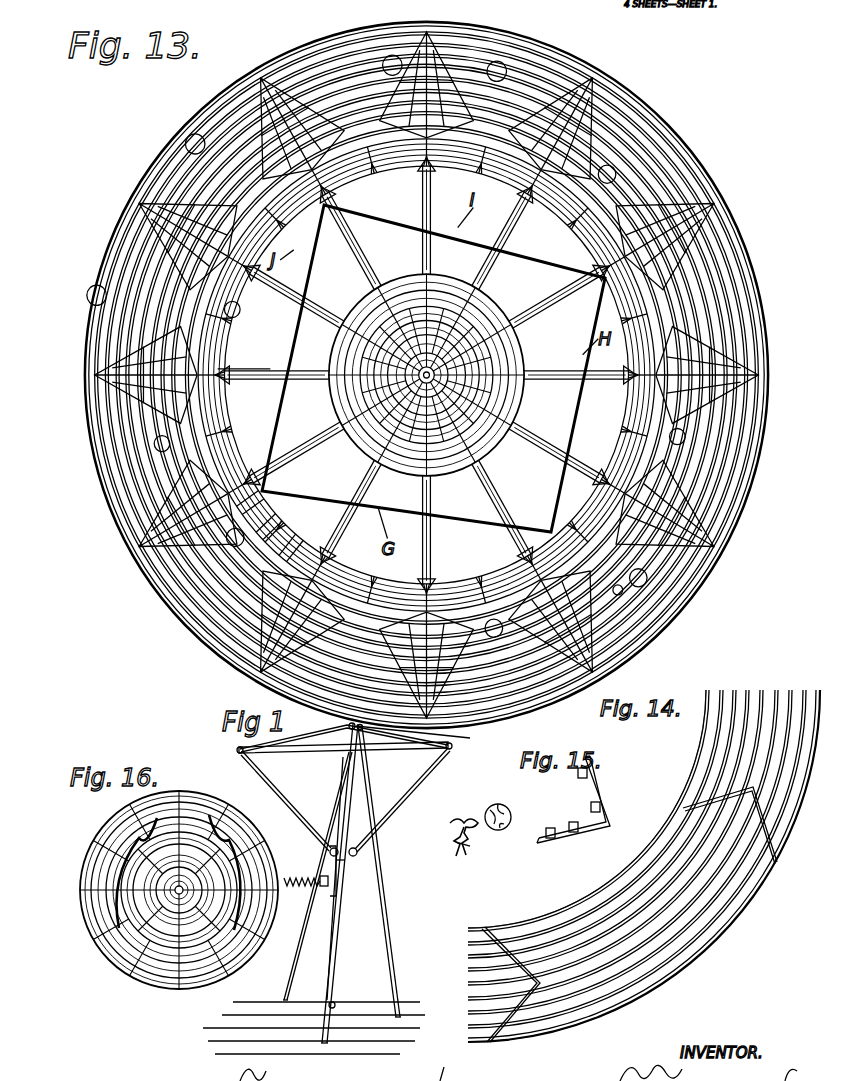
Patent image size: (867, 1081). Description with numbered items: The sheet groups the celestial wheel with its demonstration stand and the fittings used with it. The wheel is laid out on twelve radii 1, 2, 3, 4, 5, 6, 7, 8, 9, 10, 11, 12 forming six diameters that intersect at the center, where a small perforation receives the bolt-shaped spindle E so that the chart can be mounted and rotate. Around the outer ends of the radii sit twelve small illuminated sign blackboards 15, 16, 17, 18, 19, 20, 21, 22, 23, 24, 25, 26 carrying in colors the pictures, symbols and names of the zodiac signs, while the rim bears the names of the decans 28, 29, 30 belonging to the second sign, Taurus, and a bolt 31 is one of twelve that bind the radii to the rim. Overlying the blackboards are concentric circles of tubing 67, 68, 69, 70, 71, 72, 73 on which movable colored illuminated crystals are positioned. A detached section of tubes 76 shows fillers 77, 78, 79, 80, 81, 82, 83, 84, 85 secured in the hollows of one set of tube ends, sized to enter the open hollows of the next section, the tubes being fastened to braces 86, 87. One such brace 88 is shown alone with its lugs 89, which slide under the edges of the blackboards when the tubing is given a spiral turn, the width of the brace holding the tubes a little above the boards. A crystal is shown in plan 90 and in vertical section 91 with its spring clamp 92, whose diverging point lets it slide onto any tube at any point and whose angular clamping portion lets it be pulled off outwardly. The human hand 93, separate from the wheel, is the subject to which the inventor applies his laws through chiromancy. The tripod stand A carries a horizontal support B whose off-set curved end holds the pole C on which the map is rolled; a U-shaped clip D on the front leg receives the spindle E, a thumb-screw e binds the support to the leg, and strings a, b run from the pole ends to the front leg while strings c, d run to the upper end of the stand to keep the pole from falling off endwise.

In FIG. 13, the radius 1 is at (273, 391).
In FIG. 13, the radius 2 is at (293, 455).
In FIG. 13, the radius 3 is at (351, 513).
In FIG. 13, the radius 4 is at (439, 534).
In FIG. 13, the radius 5 is at (503, 513).
In FIG. 13, the radius 6 is at (560, 455).
In FIG. 13, the radius 7 is at (580, 391).
In FIG. 13, the radius 8 is at (560, 304).
In FIG. 13, the radius 9 is at (503, 242).
In FIG. 13, the radius 10 is at (441, 216).
In FIG. 13, the radius 11 is at (349, 238).
In FIG. 13, the radius 12 is at (293, 310).
In FIG. 13, the sign blackboard 15 is at (119, 375).
In FIG. 13, the sign blackboard 16 is at (166, 526).
In FIG. 13, the sign blackboard 17 is at (278, 636).
In FIG. 13, the sign blackboard 18 is at (464, 674).
In FIG. 13, the sign blackboard 19 is at (591, 626).
In FIG. 13, the sign blackboard 20 is at (689, 520).
In FIG. 13, the sign blackboard 21 is at (729, 375).
In FIG. 13, the sign blackboard 22 is at (689, 230).
In FIG. 13, the sign blackboard 23 is at (580, 123).
In FIG. 13, the sign blackboard 24 is at (461, 75).
In FIG. 13, the sign blackboard 25 is at (268, 124).
In FIG. 13, the sign blackboard 26 is at (157, 230).
In FIG. 13, the decan name 28 is at (267, 503).
In FIG. 13, the decan name 29 is at (288, 526).
In FIG. 13, the decan name 30 is at (307, 541).
In FIG. 13, the bolt 31 is at (244, 356).
In FIG. 13, the concentric circle of tubing 67 is at (426, 375).
In FIG. 13, the concentric circle of tubing 68 is at (427, 375).
In FIG. 13, the concentric circle of tubing 69 is at (426, 375).
In FIG. 13, the concentric circle of tubing 70 is at (426, 375).
In FIG. 13, the concentric circle of tubing 71 is at (426, 375).
In FIG. 13, the concentric circle of tubing 72 is at (427, 374).
In FIG. 13, the concentric circle of tubing 73 is at (426, 374).
In FIG. 1, the tripod stand A is at (387, 918).
In FIG. 1, the support B is at (345, 752).
In FIG. 1, the pole C is at (372, 748).
In FIG. 1, the U-shaped clip D is at (331, 902).
In FIG. 1, the bolt-shaped spindle E is at (318, 874).
In FIG. 1, the string a is at (392, 812).
In FIG. 1, the string b is at (282, 802).
In FIG. 1, the string c is at (285, 740).
In FIG. 1, the string d is at (416, 736).
In FIG. 1, the thumb-screw e is at (335, 1003).
In FIG. 14, the section of tubes 76 is at (743, 928).
In FIG. 14, the filler 77 is at (470, 1042).
In FIG. 14, the filler 78 is at (468, 1026).
In FIG. 14, the filler 79 is at (468, 1012).
In FIG. 14, the filler 80 is at (468, 998).
In FIG. 14, the filler 81 is at (468, 985).
In FIG. 14, the filler 82 is at (468, 972).
In FIG. 14, the filler 83 is at (468, 960).
In FIG. 14, the filler 84 is at (468, 946).
In FIG. 14, the filler 85 is at (468, 933).
In FIG. 14, the brace 86 is at (780, 860).
In FIG. 14, the brace 87 is at (497, 1044).
In FIG. 15, the brace 88 is at (608, 790).
In FIG. 15, the lug 89 is at (591, 806).
In FIG. 15, the movable crystal 90 is at (506, 830).
In FIG. 15, the movable crystal 91 is at (462, 818).
In FIG. 15, the spring clamp 92 is at (456, 846).
In FIG. 16, the human hand 93 is at (166, 993).